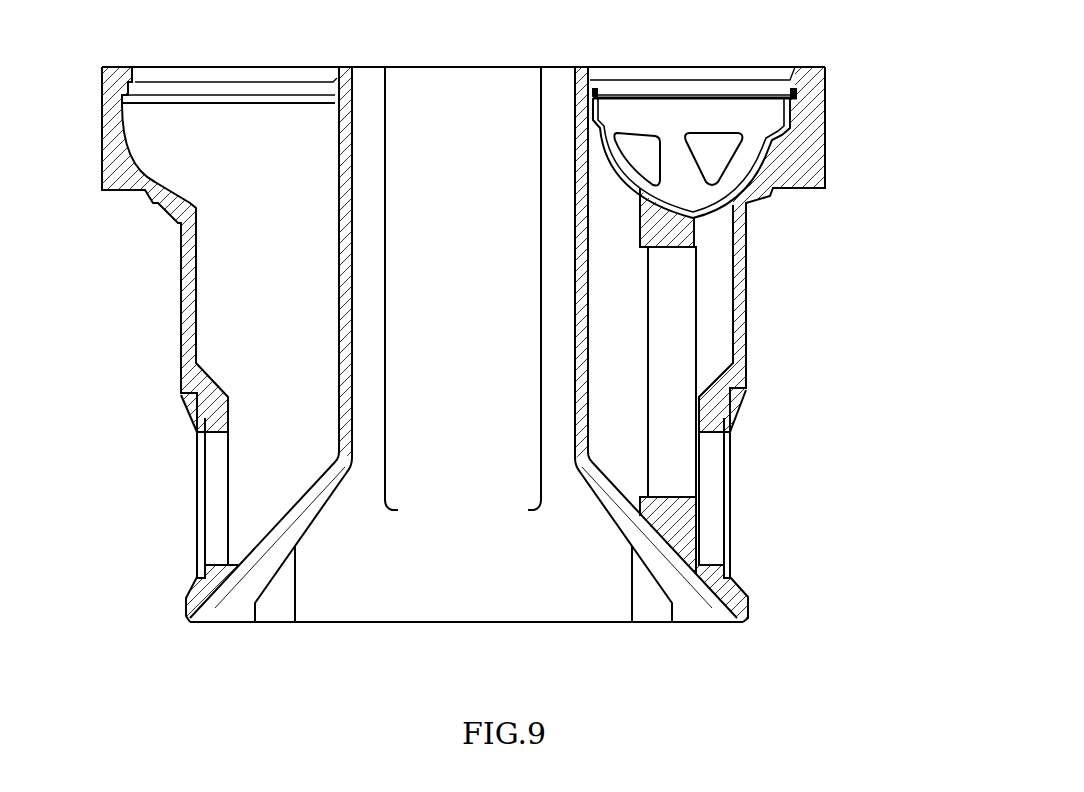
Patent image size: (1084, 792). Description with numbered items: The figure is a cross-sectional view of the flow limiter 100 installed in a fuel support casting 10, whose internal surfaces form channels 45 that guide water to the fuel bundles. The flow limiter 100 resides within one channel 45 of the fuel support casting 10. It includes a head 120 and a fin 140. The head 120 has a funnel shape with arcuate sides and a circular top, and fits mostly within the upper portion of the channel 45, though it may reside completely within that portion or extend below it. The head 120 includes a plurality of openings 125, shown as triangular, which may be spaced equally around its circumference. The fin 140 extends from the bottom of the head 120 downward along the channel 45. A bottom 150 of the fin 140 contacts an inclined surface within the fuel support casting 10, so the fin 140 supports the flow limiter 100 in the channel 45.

The fuel support casting 10 is at (852, 116).
The channel 45 is at (717, 318).
The flow limiter 100 is at (711, 254).
The head 120 is at (748, 113).
The openings 125 is at (712, 151).
The fin 140 is at (677, 430).
The bottom of the fin 150 is at (673, 517).